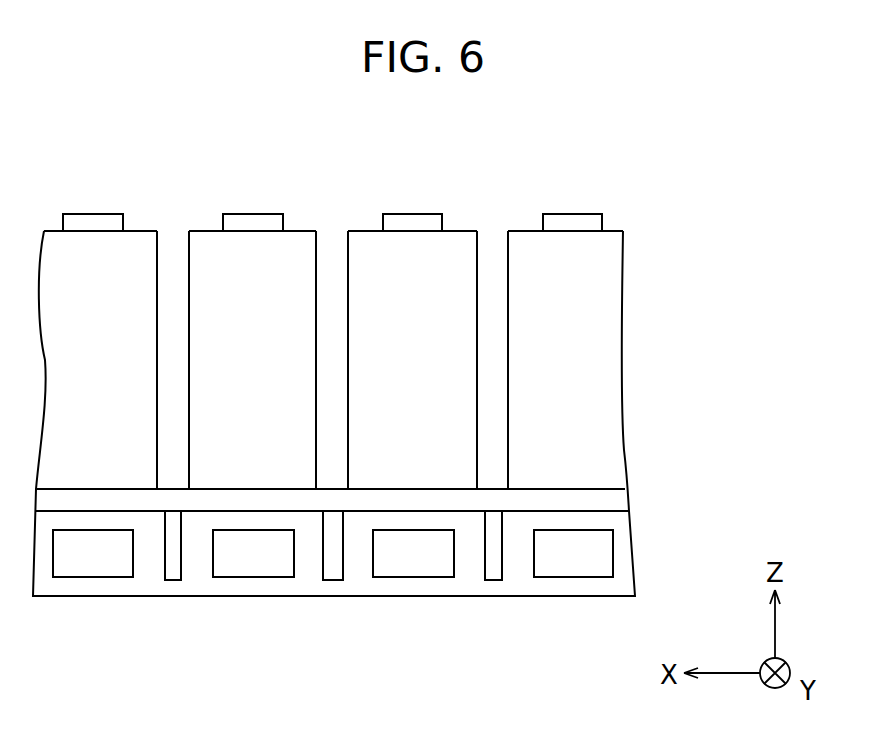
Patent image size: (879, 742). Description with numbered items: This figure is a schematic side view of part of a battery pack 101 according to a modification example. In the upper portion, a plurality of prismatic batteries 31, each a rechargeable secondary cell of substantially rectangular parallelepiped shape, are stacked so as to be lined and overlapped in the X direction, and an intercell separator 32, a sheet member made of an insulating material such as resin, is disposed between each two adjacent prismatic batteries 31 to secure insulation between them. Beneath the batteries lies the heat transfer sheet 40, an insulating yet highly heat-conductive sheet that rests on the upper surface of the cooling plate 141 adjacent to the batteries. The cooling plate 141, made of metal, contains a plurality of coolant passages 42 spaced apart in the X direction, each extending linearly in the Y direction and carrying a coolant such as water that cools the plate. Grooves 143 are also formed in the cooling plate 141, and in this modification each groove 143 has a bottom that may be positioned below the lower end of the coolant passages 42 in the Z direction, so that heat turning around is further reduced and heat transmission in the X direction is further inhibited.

The battery pack 101 is at (400, 194).
The prismatic battery 31 is at (127, 272).
The intercell separator 32 is at (174, 246).
The heat transfer sheet 40 is at (608, 502).
The coolant passage 42 is at (93, 527).
The cooling plate 141 is at (397, 598).
The groove 143 is at (179, 550).